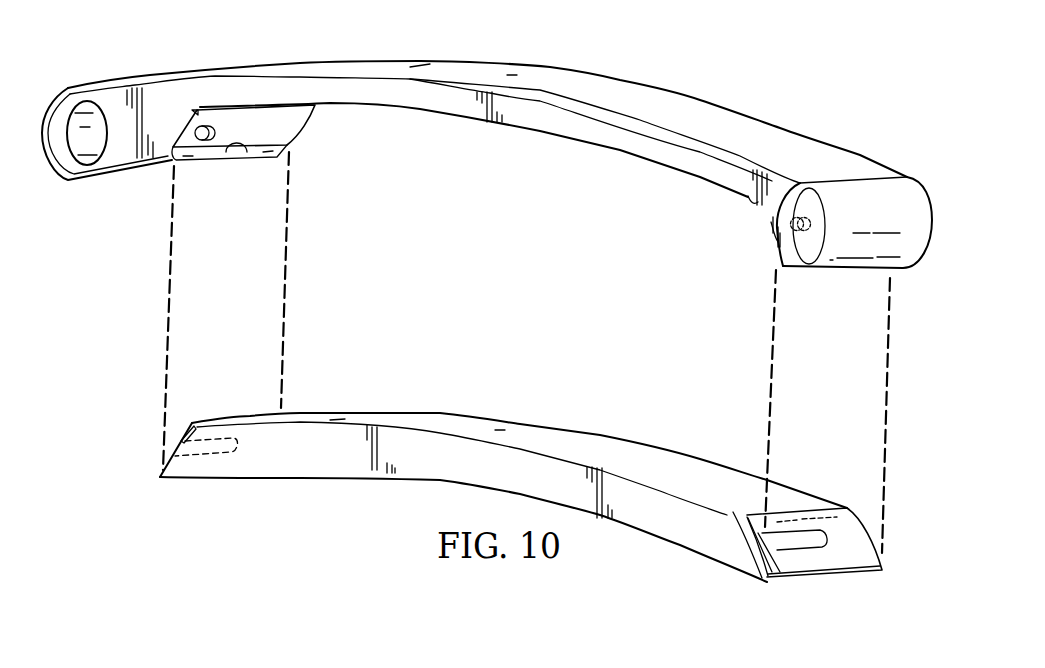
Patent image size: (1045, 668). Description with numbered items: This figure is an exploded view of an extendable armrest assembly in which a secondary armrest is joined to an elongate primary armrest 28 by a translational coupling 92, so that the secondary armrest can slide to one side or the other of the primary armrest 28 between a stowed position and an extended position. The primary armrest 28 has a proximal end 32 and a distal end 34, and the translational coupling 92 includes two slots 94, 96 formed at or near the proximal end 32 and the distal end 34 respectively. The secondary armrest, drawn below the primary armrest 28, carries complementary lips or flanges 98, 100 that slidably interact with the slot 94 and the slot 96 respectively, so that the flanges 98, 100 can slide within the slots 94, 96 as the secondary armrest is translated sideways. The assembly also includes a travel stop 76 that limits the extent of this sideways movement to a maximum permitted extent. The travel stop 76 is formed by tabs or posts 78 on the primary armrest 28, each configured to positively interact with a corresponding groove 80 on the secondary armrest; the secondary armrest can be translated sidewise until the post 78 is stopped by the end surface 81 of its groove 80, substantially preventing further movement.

The primary armrest 28 is at (530, 64).
The proximal end 32 is at (68, 73).
The distal end 34 is at (905, 156).
The travel stop 76 is at (204, 201).
The post 78 is at (210, 132).
The groove 80 is at (204, 457).
The end surface 81 is at (815, 550).
The translational coupling 92 is at (118, 289).
The slot 94 is at (241, 154).
The slot 96 is at (773, 226).
The flange 98 is at (178, 437).
The flange 100 is at (868, 530).